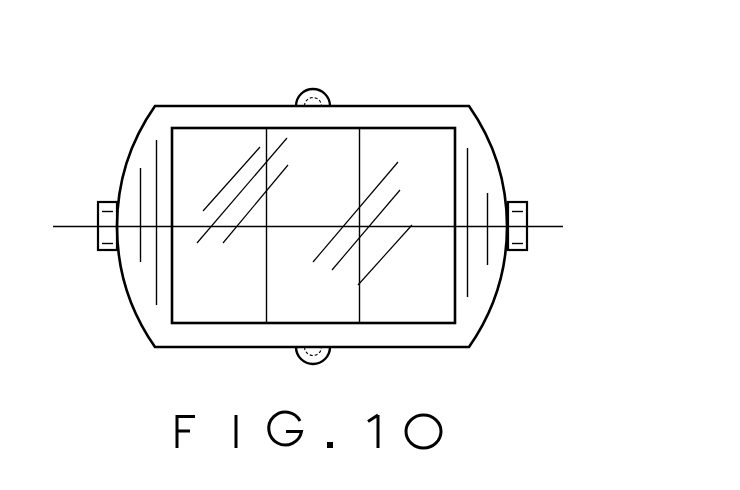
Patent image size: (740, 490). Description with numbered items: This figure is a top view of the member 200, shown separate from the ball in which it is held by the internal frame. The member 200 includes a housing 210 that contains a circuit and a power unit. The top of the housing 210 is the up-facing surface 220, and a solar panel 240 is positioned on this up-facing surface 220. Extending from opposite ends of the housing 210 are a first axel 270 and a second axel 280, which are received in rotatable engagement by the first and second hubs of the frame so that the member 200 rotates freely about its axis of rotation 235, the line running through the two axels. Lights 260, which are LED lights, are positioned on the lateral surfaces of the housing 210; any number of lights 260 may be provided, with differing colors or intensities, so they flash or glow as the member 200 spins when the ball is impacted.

The member 200 is at (210, 74).
The housing 210 is at (472, 279).
The up-facing surface 220 is at (371, 120).
The axis of rotation 235 is at (545, 226).
The solar panel 240 is at (424, 145).
The lights 260 is at (307, 88).
The first axel 270 is at (108, 210).
The second axel 280 is at (517, 212).